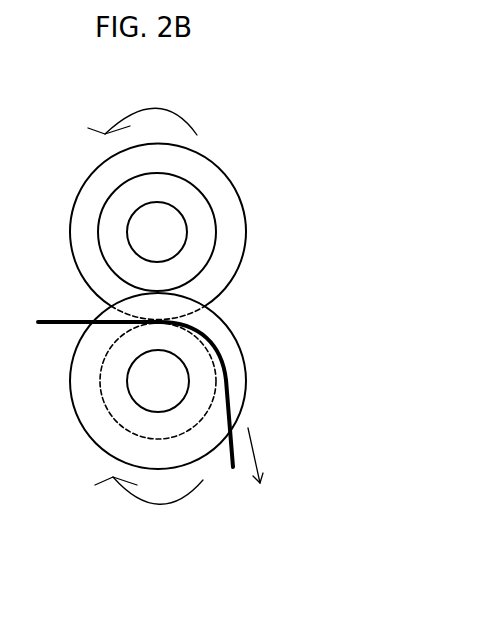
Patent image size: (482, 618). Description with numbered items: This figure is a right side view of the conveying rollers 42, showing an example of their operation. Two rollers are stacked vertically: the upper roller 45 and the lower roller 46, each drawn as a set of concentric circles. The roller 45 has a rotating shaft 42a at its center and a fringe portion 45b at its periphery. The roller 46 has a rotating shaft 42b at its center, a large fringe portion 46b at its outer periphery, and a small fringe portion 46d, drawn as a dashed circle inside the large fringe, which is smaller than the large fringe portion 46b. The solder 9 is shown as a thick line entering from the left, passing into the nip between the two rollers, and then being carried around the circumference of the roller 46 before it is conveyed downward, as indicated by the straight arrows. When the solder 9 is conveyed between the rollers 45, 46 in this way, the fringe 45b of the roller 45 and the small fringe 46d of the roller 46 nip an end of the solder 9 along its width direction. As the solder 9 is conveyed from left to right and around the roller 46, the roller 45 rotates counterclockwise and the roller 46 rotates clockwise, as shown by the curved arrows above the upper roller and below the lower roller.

The conveying rollers 42 is at (149, 318).
The roller 45 is at (155, 213).
The rotating shaft 42a is at (168, 236).
The fringe portion 45b is at (71, 240).
The roller 46 is at (158, 418).
The large fringe portion 46b is at (75, 405).
The small fringe portion 46d is at (101, 372).
The rotating shaft 42b is at (177, 381).
The solder 9 is at (82, 303).